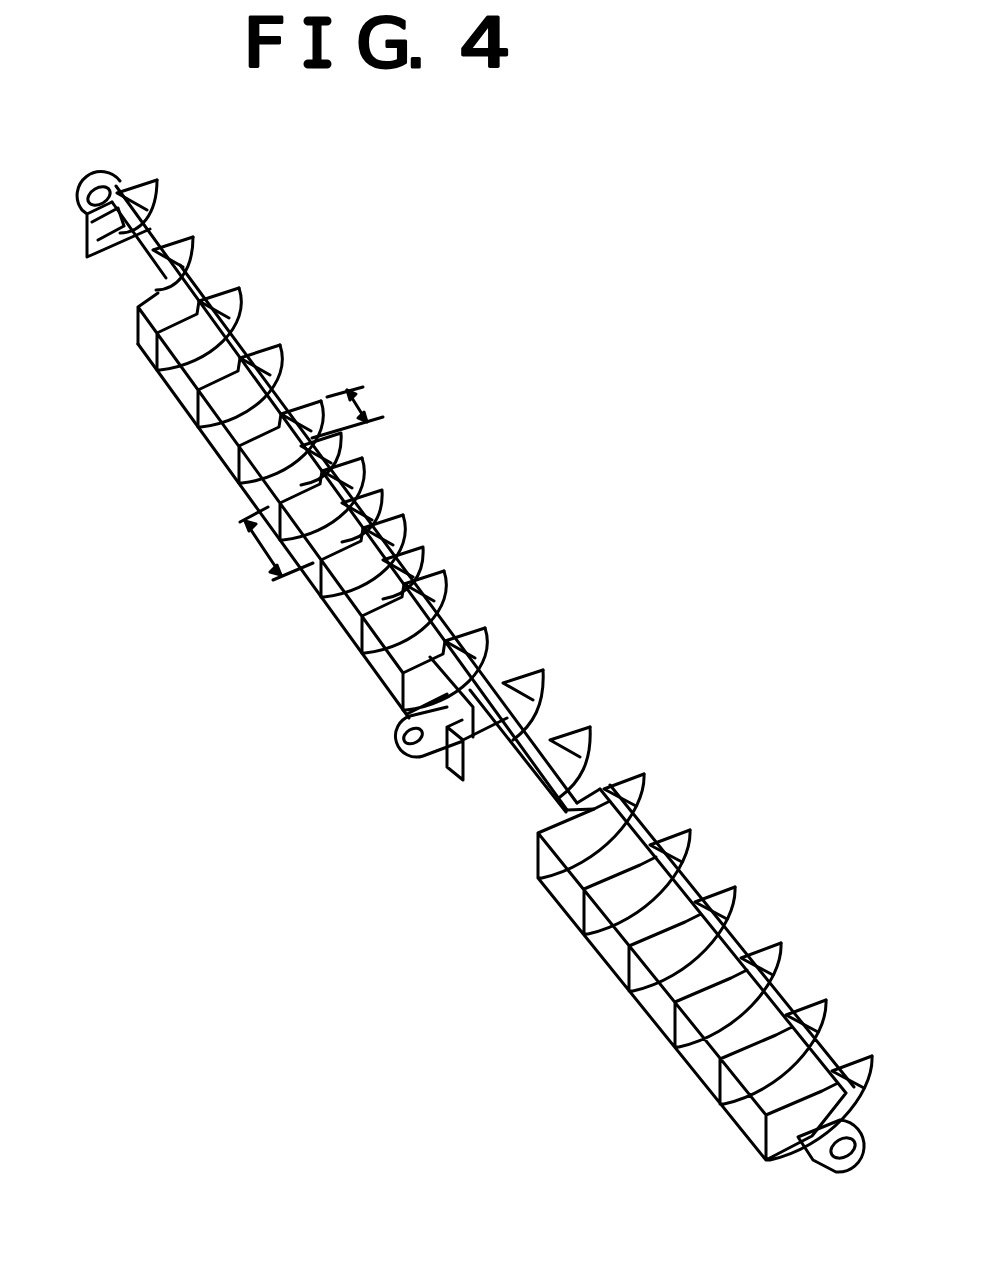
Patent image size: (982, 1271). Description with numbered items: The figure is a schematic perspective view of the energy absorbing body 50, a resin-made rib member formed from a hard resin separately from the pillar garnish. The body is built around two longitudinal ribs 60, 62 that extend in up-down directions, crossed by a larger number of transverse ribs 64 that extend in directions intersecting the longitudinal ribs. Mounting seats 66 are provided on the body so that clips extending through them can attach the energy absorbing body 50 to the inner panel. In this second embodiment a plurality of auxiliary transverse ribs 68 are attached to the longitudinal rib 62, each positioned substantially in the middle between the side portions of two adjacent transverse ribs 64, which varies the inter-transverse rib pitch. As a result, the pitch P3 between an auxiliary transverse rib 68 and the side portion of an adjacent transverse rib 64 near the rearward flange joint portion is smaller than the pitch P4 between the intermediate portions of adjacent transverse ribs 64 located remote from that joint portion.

The energy absorbing body 50 is at (278, 340).
The longitudinal rib 60 is at (222, 452).
The longitudinal rib 62 is at (283, 393).
The transverse ribs 64 is at (236, 292).
The mounting seats 66 is at (434, 742).
The auxiliary transverse ribs 68 is at (386, 490).
The pitch P3 is at (363, 409).
The pitch P4 is at (254, 548).